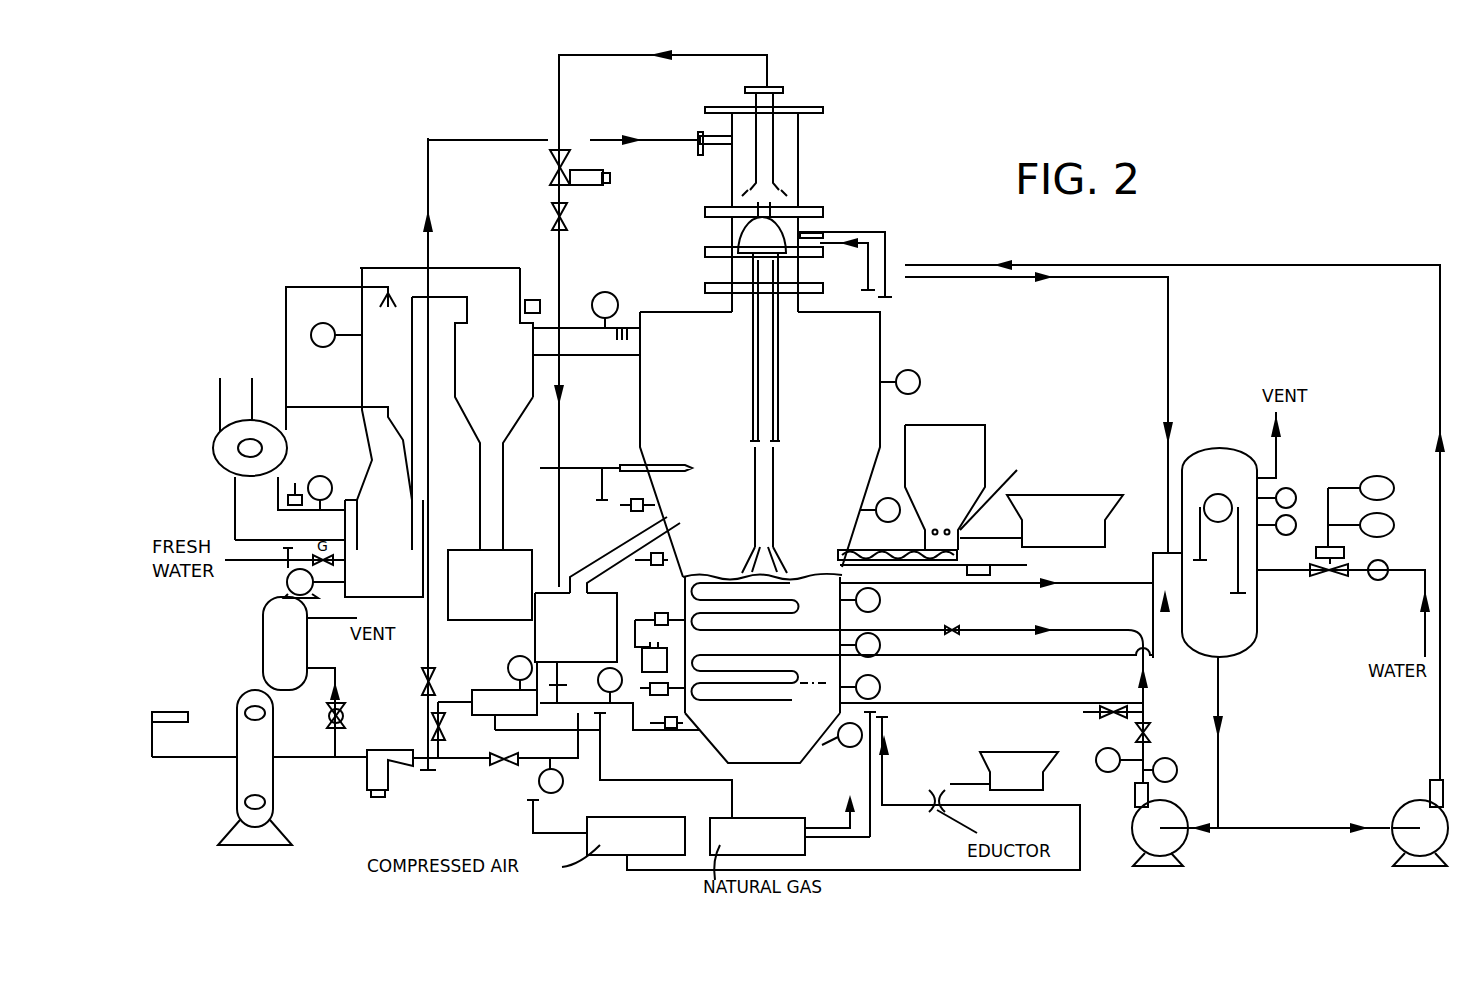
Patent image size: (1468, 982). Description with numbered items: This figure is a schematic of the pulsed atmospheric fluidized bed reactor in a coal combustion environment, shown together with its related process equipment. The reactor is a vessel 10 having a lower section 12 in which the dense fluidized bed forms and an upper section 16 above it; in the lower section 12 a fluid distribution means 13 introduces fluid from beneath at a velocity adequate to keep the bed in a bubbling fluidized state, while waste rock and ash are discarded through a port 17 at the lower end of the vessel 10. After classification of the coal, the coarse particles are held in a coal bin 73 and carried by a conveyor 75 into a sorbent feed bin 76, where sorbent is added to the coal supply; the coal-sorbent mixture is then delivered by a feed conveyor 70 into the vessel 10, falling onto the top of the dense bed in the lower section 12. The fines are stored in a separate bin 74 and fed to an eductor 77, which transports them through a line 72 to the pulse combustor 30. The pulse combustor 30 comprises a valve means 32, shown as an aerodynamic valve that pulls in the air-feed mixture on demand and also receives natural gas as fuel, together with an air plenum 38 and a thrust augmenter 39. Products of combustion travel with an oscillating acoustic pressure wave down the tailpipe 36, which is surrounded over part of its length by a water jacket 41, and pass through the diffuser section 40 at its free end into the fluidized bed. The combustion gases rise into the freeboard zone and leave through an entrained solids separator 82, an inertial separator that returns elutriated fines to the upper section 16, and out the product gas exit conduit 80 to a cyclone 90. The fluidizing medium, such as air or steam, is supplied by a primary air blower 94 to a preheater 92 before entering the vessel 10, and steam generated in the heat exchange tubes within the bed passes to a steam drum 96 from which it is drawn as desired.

The vessel 10 is at (892, 315).
The lower section 12 is at (835, 672).
The fluid distribution means 13 is at (782, 735).
The upper section 16 is at (857, 352).
The port 17 is at (615, 567).
The pulse combustor 30 is at (830, 161).
The valve means 32 is at (772, 212).
The tailpipe 36 is at (770, 365).
The air plenum 38 is at (790, 150).
The thrust augmenter 39 is at (782, 190).
The diffuser section 40 is at (782, 565).
The water jacket 41 is at (782, 418).
The feed conveyor 70 is at (896, 562).
The line 72 is at (887, 233).
The coal bin 73 is at (1050, 495).
The bin 74 is at (1058, 786).
The conveyor 75 is at (1003, 491).
The sorbent feed bin 76 is at (985, 430).
The eductor 77 is at (930, 812).
The product gas exit conduit 80 is at (569, 323).
The gas solids separator 82 is at (626, 342).
The cyclone 90 is at (470, 348).
The preheater 92 is at (497, 690).
The primary air blower 94 is at (270, 808).
The steam drum 96 is at (1258, 613).